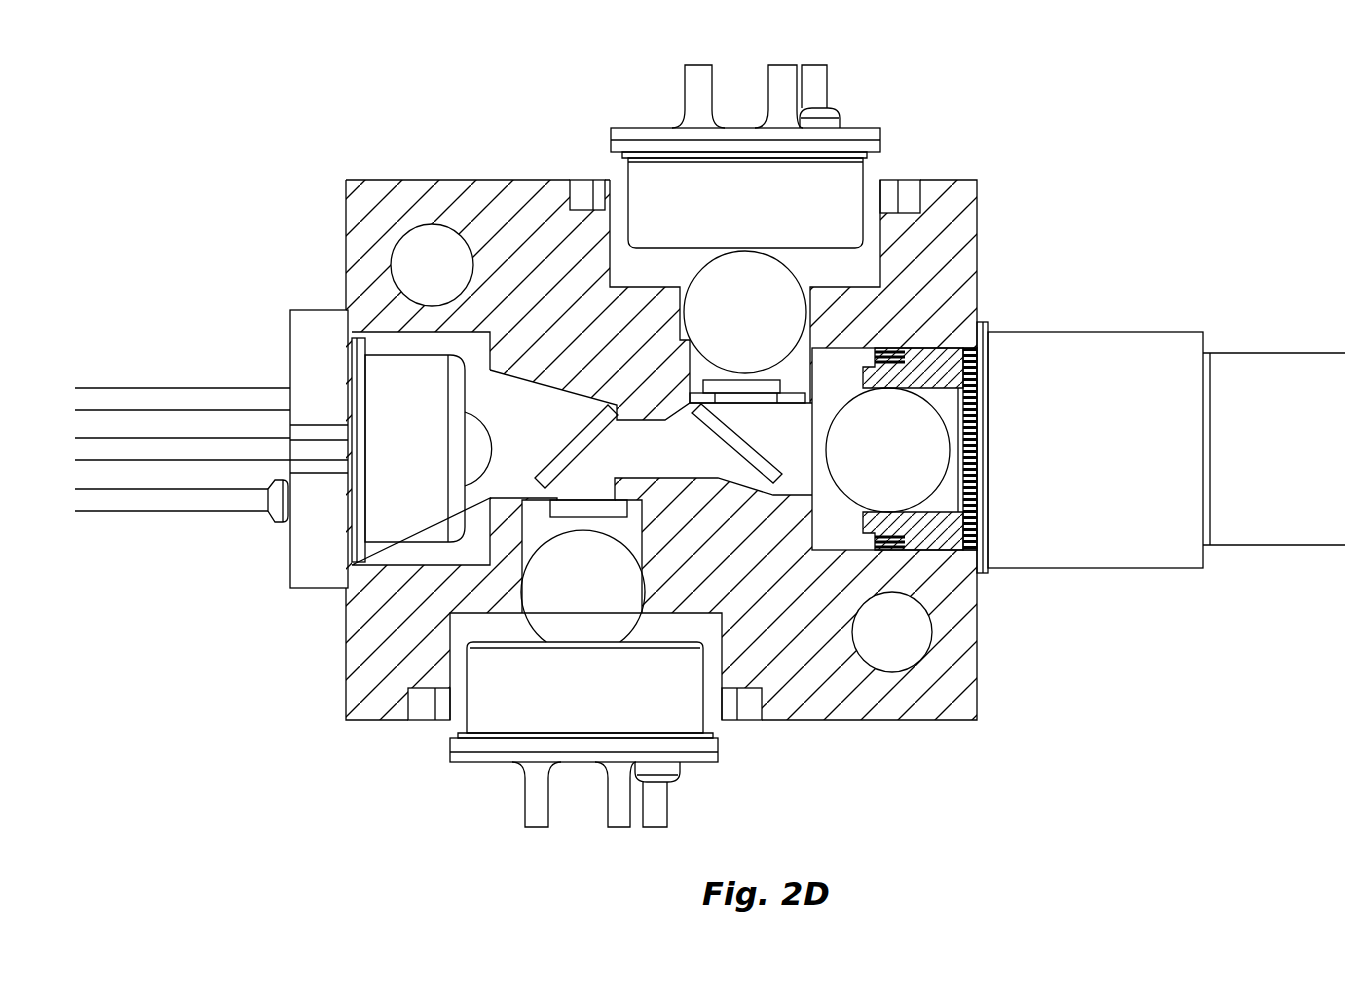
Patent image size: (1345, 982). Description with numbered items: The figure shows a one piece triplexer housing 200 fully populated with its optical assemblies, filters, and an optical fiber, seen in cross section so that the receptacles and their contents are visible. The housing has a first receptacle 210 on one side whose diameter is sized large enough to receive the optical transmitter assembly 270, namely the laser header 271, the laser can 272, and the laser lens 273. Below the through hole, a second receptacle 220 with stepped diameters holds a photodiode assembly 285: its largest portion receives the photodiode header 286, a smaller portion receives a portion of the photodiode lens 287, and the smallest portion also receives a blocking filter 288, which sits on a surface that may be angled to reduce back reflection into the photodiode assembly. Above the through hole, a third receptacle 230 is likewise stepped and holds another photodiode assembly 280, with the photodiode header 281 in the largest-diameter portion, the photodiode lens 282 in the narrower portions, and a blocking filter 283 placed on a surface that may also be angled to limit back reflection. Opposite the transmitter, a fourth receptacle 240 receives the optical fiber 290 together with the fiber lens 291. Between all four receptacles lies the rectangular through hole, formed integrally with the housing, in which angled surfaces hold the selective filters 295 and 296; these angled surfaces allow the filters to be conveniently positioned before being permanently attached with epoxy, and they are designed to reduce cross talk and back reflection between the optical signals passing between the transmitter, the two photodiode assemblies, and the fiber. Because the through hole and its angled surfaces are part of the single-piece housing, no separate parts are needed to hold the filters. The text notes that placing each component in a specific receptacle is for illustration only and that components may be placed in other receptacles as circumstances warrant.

The one piece triplexer housing 200 is at (1075, 130).
The first receptacle 210 is at (385, 555).
The second receptacle 220 is at (488, 627).
The third receptacle 230 is at (887, 193).
The fourth receptacle 240 is at (920, 472).
The optical transmitter assembly 270 is at (318, 288).
The laser header 271 is at (320, 562).
The laser can 272 is at (424, 464).
The laser lens 273 is at (477, 463).
The photodiode assembly 280 is at (868, 82).
The photodiode header 281 is at (827, 138).
The photodiode lens 282 is at (703, 285).
The blocking filter 283 is at (700, 398).
The photodiode assembly 285 is at (655, 827).
The photodiode header 286 is at (705, 723).
The photodiode lens 287 is at (645, 578).
The blocking filter 288 is at (630, 503).
The optical fiber 290 is at (1002, 317).
The fiber lens 291 is at (980, 572).
The selective filter 295 is at (752, 470).
The selective filter 296 is at (603, 425).